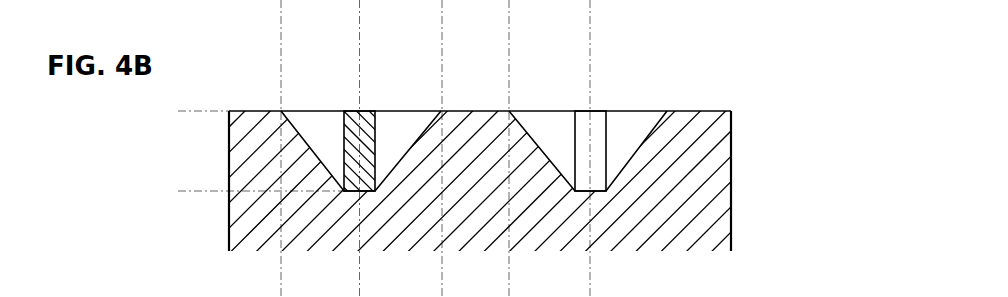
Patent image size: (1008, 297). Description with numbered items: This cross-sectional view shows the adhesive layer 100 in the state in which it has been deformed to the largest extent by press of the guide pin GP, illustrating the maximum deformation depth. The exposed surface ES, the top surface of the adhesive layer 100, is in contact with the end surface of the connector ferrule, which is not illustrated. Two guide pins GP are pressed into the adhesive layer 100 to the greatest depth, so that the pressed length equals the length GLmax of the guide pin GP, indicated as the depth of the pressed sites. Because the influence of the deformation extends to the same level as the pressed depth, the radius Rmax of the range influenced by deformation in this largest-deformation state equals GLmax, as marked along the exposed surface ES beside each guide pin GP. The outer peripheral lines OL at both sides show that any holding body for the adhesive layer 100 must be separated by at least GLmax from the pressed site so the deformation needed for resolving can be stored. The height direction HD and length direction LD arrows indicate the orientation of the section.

The adhesive layer 100 is at (712, 125).
The exposed surface ES is at (248, 111).
The outer peripheral line OL is at (228, 235).
The guide pin GP is at (366, 152).
The length of guide pin GLmax is at (216, 111).
The radius of range influenced by deformation in the state of having largest deforma Rmax is at (667, 71).
The height direction HD is at (832, 135).
The length direction LD is at (782, 275).